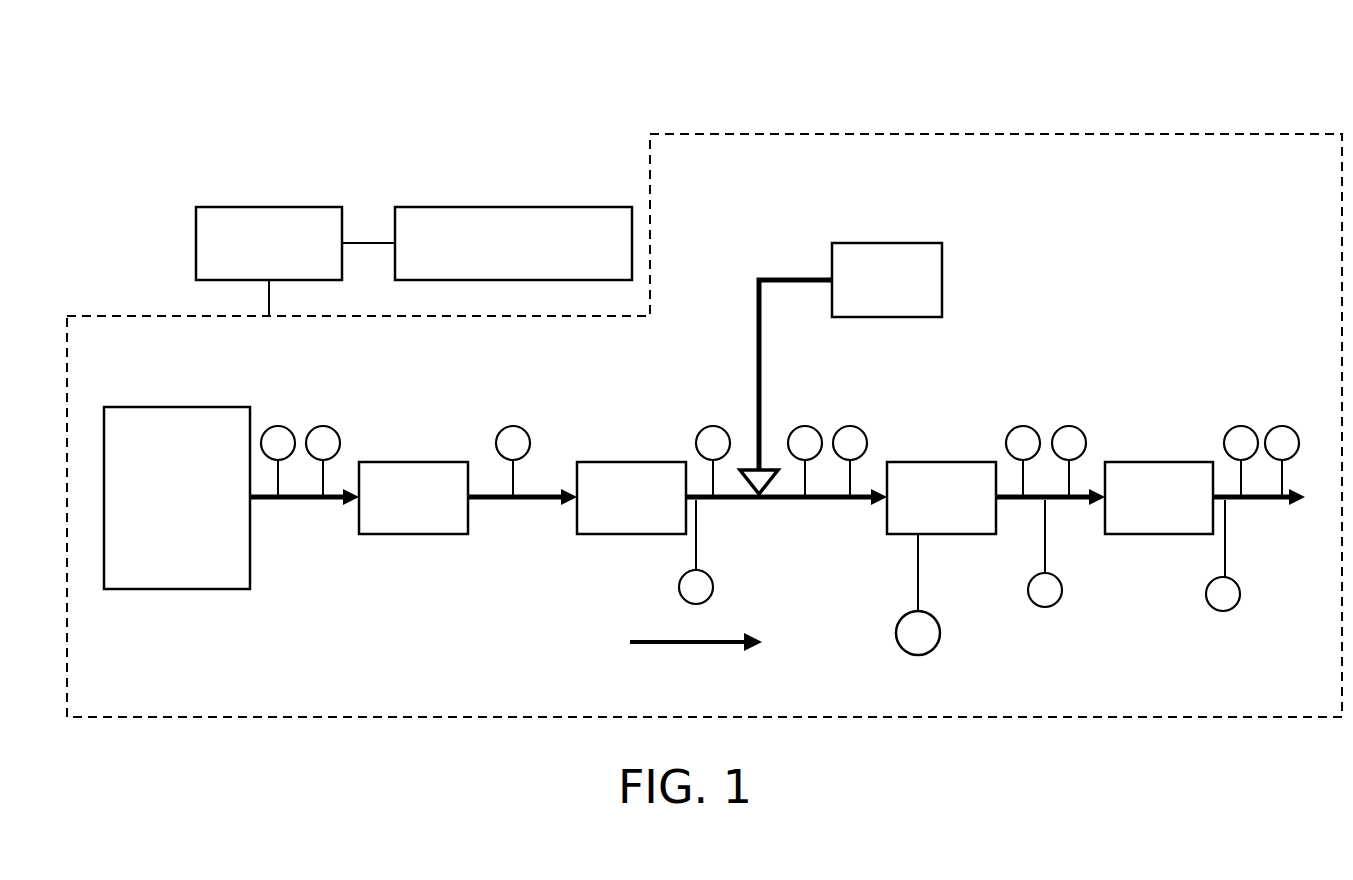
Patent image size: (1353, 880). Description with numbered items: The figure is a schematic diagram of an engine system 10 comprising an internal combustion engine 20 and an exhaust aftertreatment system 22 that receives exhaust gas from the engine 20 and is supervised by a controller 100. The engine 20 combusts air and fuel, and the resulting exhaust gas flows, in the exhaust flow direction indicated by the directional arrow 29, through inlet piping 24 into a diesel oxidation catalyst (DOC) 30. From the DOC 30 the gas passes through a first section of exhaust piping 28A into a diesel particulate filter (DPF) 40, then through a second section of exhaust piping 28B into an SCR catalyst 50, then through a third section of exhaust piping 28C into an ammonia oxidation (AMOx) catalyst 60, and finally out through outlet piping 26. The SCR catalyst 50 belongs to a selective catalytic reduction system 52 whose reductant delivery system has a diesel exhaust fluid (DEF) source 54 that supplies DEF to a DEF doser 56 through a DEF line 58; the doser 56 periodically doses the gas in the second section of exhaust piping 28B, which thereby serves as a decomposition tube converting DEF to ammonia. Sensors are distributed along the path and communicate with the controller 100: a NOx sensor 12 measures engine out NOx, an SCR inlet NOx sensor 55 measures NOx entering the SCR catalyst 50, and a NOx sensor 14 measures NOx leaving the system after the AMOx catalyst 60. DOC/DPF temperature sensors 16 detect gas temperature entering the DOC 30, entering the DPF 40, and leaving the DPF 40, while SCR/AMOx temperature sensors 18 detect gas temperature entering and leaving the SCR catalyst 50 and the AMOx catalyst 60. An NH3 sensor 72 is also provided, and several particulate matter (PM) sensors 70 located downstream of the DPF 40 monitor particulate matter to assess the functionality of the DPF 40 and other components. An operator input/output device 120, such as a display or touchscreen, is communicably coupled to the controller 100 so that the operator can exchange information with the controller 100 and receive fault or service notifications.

The engine system 10 is at (966, 54).
The NOx sensor 12 is at (321, 426).
The NOx sensor 14 is at (1240, 426).
The temperature sensors 16 is at (276, 426).
The temperature sensors 18 is at (804, 426).
The internal combustion engine 20 is at (177, 498).
The exhaust aftertreatment system 22 is at (480, 651).
The inlet piping 24 is at (305, 500).
The outlet piping 26 is at (1258, 500).
The first section of exhaust piping 28A is at (495, 500).
The second section of exhaust piping 28B is at (722, 500).
The third section of exhaust piping 28C is at (1020, 500).
The directional arrow 29 is at (685, 646).
The diesel oxidation catalyst 30 is at (413, 498).
The diesel particulate filter 40 is at (631, 498).
The SCR catalyst 50 is at (941, 498).
The selective catalytic reduction system 52 is at (878, 201).
The diesel exhaust fluid source 54 is at (887, 280).
The NOx sensor 55 is at (849, 426).
The DEF doser 56 is at (1068, 426).
The DEF line 58 is at (757, 336).
The ammonia oxidation catalyst 60 is at (1159, 498).
The particulate matter sensor 70 is at (713, 590).
The NH3 sensor 72 is at (940, 636).
The controller 100 is at (295, 261).
The operator input/output device 120 is at (513, 243).